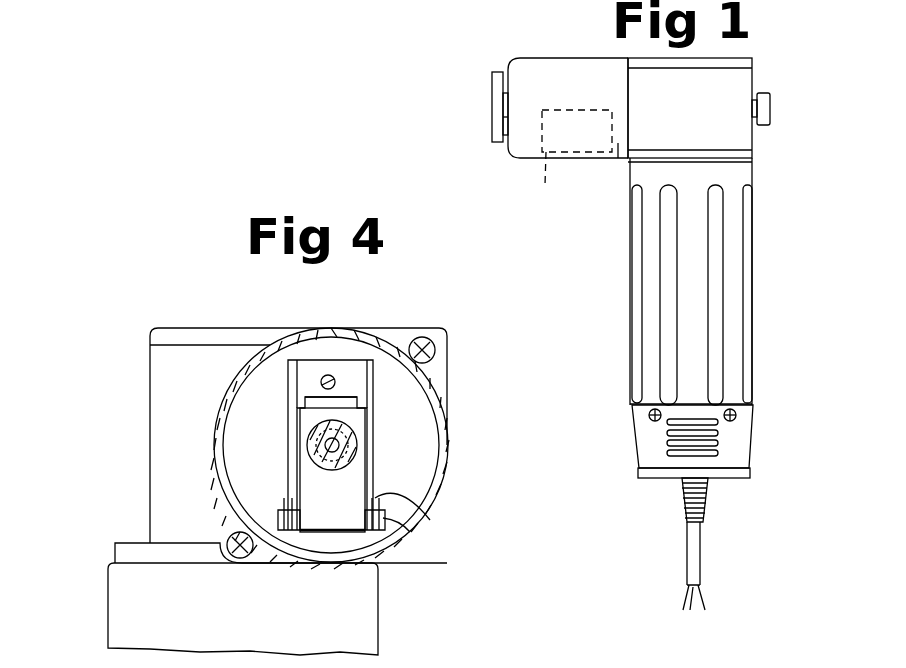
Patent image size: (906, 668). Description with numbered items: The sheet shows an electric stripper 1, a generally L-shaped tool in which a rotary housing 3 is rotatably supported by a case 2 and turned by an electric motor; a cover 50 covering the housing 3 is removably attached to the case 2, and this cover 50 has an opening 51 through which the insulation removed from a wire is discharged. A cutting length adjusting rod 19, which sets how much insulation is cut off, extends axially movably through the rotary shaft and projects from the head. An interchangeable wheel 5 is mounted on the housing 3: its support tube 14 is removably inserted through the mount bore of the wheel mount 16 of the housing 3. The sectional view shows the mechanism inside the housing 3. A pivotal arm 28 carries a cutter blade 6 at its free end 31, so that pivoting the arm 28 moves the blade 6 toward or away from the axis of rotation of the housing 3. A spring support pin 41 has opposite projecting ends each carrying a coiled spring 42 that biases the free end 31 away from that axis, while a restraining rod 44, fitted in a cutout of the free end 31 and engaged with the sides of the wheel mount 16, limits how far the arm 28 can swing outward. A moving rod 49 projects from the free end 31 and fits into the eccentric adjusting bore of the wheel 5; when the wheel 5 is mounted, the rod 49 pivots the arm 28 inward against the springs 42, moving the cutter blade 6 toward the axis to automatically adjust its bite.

In FIG. 1, the electric stripper 1 is at (630, 305).
In FIG. 4, the electric stripper 1 is at (305, 455).
In FIG. 1, the case 2 is at (650, 313).
In FIG. 4, the case 2 is at (372, 623).
In FIG. 4, the rotary housing 3 is at (330, 537).
In FIG. 1, the interchangeable wheel 5 is at (488, 124).
In FIG. 4, the cutter blade 6 is at (322, 446).
In FIG. 4, the support tube 14 is at (352, 445).
In FIG. 4, the wheel mount 16 is at (352, 478).
In FIG. 1, the cutting length adjusting rod 19 is at (772, 110).
In FIG. 4, the pivotal arm 28 is at (329, 352).
In FIG. 4, the free end 31 is at (309, 365).
In FIG. 4, the spring support pin 41 is at (408, 532).
In FIG. 4, the coiled spring 42 is at (383, 518).
In FIG. 4, the restraining rod 44 is at (373, 425).
In FIG. 4, the moving rod 49 is at (333, 380).
In FIG. 1, the cover 50 is at (565, 65).
In FIG. 4, the cover 50 is at (441, 478).
In FIG. 1, the opening 51 is at (573, 164).